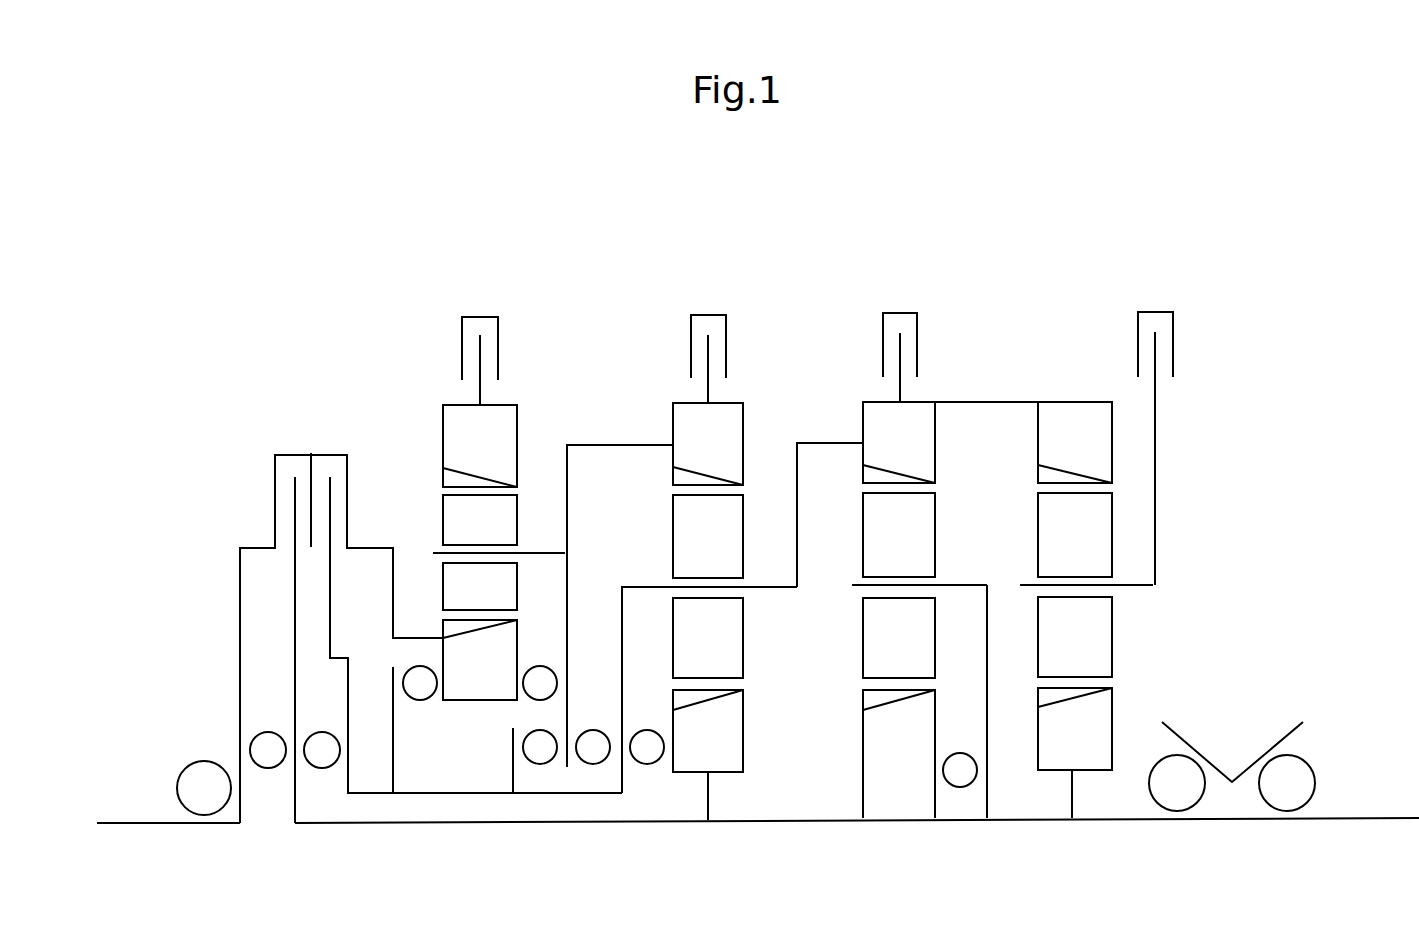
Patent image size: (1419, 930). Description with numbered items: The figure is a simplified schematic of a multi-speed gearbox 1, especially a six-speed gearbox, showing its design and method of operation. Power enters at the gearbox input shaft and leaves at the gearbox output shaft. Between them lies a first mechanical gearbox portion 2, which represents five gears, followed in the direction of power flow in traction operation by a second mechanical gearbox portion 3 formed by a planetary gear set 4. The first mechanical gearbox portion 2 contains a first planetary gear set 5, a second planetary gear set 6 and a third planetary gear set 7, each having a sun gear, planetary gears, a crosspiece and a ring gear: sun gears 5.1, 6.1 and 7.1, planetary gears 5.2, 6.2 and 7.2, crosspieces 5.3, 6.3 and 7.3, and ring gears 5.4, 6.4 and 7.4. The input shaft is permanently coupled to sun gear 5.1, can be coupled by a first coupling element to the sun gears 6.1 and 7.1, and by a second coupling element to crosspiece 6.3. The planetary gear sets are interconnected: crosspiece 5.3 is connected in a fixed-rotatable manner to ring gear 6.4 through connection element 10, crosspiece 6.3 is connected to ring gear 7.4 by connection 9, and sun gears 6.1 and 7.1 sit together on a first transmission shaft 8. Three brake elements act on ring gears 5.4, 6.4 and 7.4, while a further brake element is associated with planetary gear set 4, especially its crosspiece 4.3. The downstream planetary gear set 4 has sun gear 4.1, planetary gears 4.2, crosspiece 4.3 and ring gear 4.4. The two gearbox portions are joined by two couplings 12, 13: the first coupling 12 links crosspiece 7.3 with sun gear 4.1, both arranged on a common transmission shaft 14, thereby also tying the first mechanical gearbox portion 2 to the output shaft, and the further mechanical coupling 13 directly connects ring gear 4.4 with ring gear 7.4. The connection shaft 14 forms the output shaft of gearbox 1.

The multi-speed gearbox 1 is at (872, 242).
The first mechanical gearbox portion 2 is at (582, 287).
The second mechanical gearbox portion 3 is at (1055, 358).
The planetary gear set 4 is at (1038, 443).
The first planetary gear set 5 is at (517, 403).
The second planetary gear set 6 is at (747, 411).
The third planetary gear set 7 is at (860, 398).
The first transmission shaft 8 is at (723, 820).
The connection 9 is at (794, 513).
The connection element 10 is at (622, 443).
The first coupling 12 is at (985, 715).
The further mechanical coupling 13 is at (975, 396).
The common transmission shaft 14 is at (1072, 818).
The sun gear of planetary gear set 4 4.1 is at (1075, 729).
The planetary gears of planetary gear set 4 4.2 is at (1075, 637).
The crosspiece of planetary gear set 4 4.3 is at (1150, 587).
The ring gear of planetary gear set 4 4.4 is at (1075, 442).
The sun gear of first planetary gear set 5.1 is at (480, 660).
The planetary gears of first planetary gear set 5.2 is at (480, 586).
The crosspiece of first planetary gear set 5.3 is at (547, 553).
The ring gear of first planetary gear set 5.4 is at (480, 446).
The sun gear of second planetary gear set 6.1 is at (708, 731).
The planetary gears of second planetary gear set 6.2 is at (708, 638).
The crosspiece of second planetary gear set 6.3 is at (773, 588).
The ring gear of second planetary gear set 6.4 is at (708, 444).
The sun gear of third planetary gear set 7.1 is at (899, 754).
The planetary gears of third planetary gear set 7.2 is at (899, 638).
The crosspiece of third planetary gear set 7.3 is at (955, 585).
The ring gear of third planetary gear set 7.4 is at (899, 442).